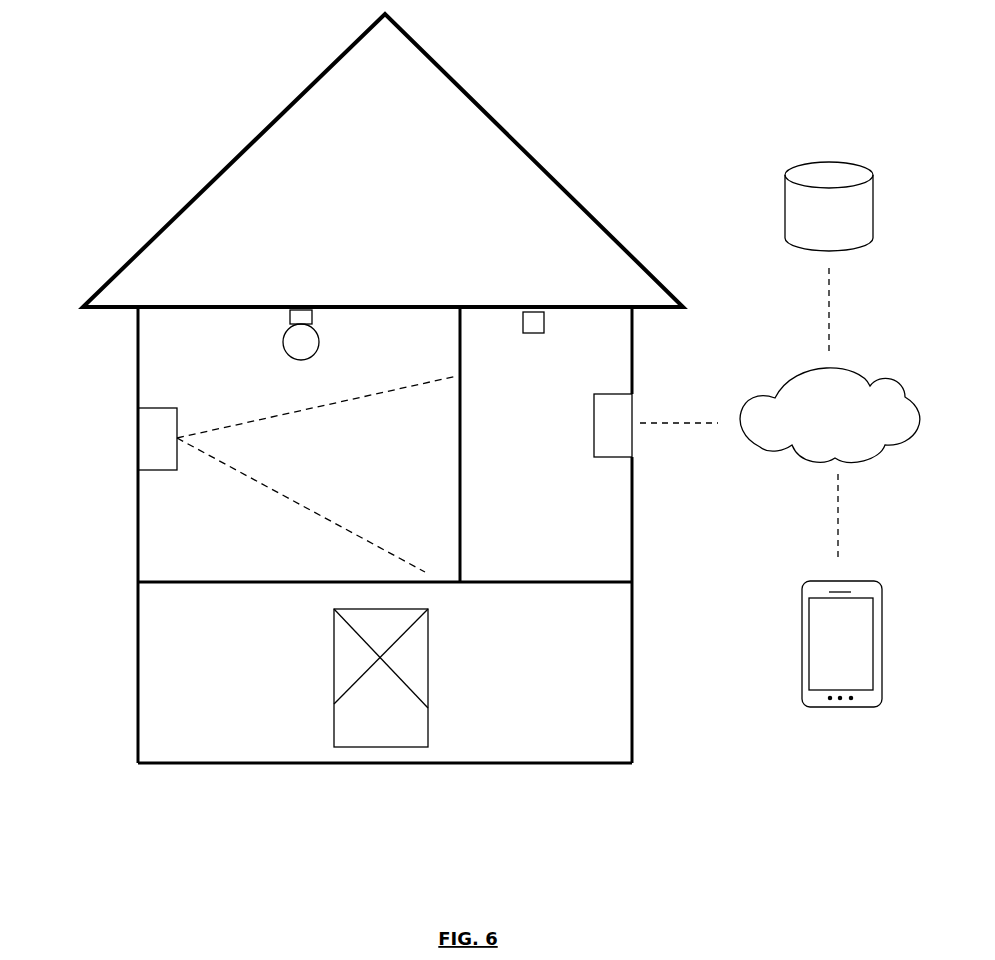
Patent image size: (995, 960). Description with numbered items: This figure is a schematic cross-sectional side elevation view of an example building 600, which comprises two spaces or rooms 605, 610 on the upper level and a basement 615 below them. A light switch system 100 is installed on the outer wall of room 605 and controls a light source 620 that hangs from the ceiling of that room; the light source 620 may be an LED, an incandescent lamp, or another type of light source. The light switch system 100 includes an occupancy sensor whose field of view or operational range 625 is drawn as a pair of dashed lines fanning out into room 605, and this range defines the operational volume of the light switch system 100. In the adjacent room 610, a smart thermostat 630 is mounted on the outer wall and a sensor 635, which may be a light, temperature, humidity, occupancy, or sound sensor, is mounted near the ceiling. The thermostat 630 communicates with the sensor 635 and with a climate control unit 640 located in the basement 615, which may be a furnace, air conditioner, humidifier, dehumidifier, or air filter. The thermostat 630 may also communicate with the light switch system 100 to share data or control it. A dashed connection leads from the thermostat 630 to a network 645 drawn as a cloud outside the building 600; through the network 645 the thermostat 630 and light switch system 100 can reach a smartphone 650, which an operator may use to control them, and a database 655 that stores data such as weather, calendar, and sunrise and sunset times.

The light switch system 100 is at (152, 441).
The building 600 is at (343, 388).
The room 605 is at (299, 445).
The room 610 is at (546, 519).
The basement 615 is at (385, 672).
The light source 620 is at (300, 318).
The operational range 625 is at (237, 470).
The smart thermostat 630 is at (606, 432).
The sensor 635 is at (532, 318).
The climate control unit 640 is at (381, 678).
The network 645 is at (830, 415).
The smartphone 650 is at (842, 644).
The database 655 is at (829, 206).